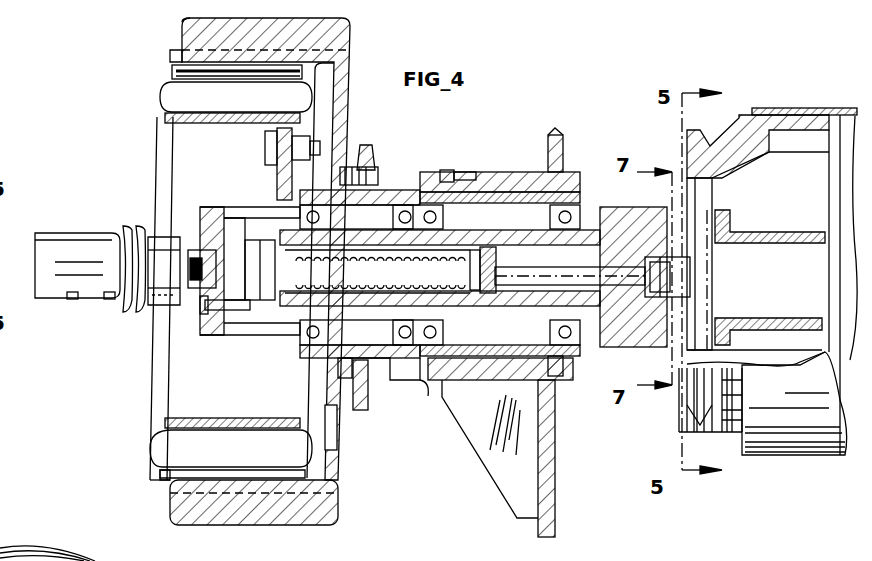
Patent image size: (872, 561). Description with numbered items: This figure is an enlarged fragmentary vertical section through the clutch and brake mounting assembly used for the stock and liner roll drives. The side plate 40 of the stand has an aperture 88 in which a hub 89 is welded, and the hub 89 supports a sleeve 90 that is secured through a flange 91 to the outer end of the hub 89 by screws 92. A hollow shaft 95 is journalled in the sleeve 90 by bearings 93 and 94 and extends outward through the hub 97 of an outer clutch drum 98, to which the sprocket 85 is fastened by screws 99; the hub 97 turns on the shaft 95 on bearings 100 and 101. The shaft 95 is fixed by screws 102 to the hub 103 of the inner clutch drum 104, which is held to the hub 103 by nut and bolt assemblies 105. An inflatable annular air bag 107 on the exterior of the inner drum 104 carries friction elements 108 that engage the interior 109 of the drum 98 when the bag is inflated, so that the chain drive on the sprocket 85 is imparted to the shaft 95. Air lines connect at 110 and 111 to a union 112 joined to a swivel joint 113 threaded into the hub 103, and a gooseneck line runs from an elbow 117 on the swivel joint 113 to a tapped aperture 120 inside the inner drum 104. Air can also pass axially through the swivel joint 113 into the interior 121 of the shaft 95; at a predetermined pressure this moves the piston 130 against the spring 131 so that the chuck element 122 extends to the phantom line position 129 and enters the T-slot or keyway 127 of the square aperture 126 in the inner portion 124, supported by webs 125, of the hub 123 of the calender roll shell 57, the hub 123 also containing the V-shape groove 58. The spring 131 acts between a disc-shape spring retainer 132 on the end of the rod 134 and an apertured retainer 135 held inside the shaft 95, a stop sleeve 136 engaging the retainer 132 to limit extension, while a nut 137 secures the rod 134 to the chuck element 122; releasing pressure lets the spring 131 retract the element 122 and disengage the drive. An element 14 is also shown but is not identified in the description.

The nut 14 is at (206, 269).
The side plate 40 is at (560, 472).
The calender roll shell 57 is at (803, 460).
The V-shape groove 58 is at (698, 420).
The sprocket 85 is at (368, 402).
The aperture 88 is at (565, 166).
The hub 89 is at (513, 172).
The sleeve 90 is at (565, 356).
The flange 91 is at (428, 386).
The screws 92 is at (452, 170).
The bearing 93 is at (441, 321).
The bearing 94 is at (500, 368).
The hollow shaft 95 is at (478, 208).
The hub of outer clutch drum 97 is at (383, 191).
The outer clutch drum 98 is at (355, 472).
The screws 99 is at (378, 166).
The bearing 100 is at (333, 213).
The bearing 101 is at (359, 360).
The screws 102 is at (204, 314).
The hub of inner clutch drum 103 is at (241, 335).
The inner clutch drum 104 is at (260, 418).
The nut and bolt assemblies 105 is at (266, 147).
The inflatable annular air bag 107 is at (160, 98).
The friction elements 108 is at (172, 72).
The interior of the drum 109 is at (243, 470).
The air line connection 110 is at (70, 299).
The air line connection 111 is at (110, 299).
The union 112 is at (103, 214).
The swivel joint 113 is at (181, 237).
The elbow 117 is at (158, 312).
The tapped aperture 120 is at (236, 123).
The interior of the hollow shaft 121 is at (253, 270).
The chuck element 122 is at (642, 208).
The hub of the calender roll shell 123 is at (687, 154).
The inner portion 124 is at (779, 232).
The webs 125 is at (814, 217).
The square aperture 126 is at (748, 252).
The T-slot or keyway 127 is at (700, 223).
The phantom line position 129 is at (708, 316).
The piston 130 is at (532, 275).
The spring 131 is at (336, 278).
The disc-shape spring retainer 132 is at (440, 268).
The rod 134 is at (377, 271).
The apertured retainer 135 is at (490, 270).
The stop sleeve 136 is at (452, 270).
The nut 137 is at (570, 279).